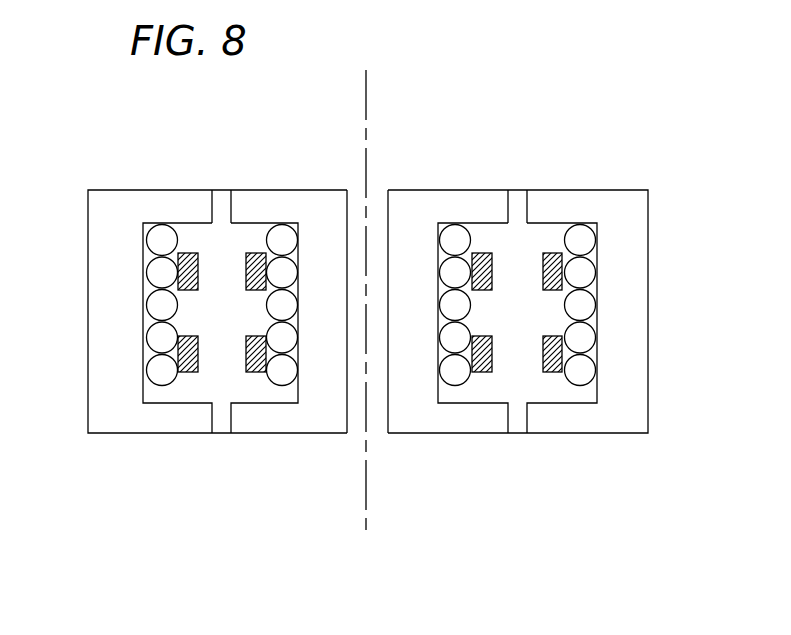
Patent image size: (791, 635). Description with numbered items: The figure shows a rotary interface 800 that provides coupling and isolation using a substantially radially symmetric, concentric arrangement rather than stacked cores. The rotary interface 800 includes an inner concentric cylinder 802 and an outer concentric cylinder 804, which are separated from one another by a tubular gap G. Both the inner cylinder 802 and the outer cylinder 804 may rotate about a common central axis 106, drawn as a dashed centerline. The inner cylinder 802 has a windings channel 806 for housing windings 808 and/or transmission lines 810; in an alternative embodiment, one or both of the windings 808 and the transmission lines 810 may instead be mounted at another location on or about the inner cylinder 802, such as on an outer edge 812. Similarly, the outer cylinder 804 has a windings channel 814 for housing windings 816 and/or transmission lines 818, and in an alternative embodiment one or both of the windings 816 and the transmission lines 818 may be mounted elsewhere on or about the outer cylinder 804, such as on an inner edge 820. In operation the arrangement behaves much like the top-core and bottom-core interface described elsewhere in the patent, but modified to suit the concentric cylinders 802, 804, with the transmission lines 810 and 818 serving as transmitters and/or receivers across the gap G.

The rotary interface 800 is at (80, 157).
The inner concentric cylinder 802 is at (318, 200).
The outer concentric cylinder 804 is at (98, 310).
The windings channel 806 is at (248, 232).
The windings 808 is at (280, 380).
The transmission lines 810 is at (245, 287).
The outer edge 812 is at (228, 215).
The windings channel 814 is at (557, 392).
The windings 816 is at (585, 268).
The transmission lines 818 is at (542, 287).
The inner edge 820 is at (530, 205).
The central axis 106 is at (369, 505).
The tubular gap G is at (223, 257).